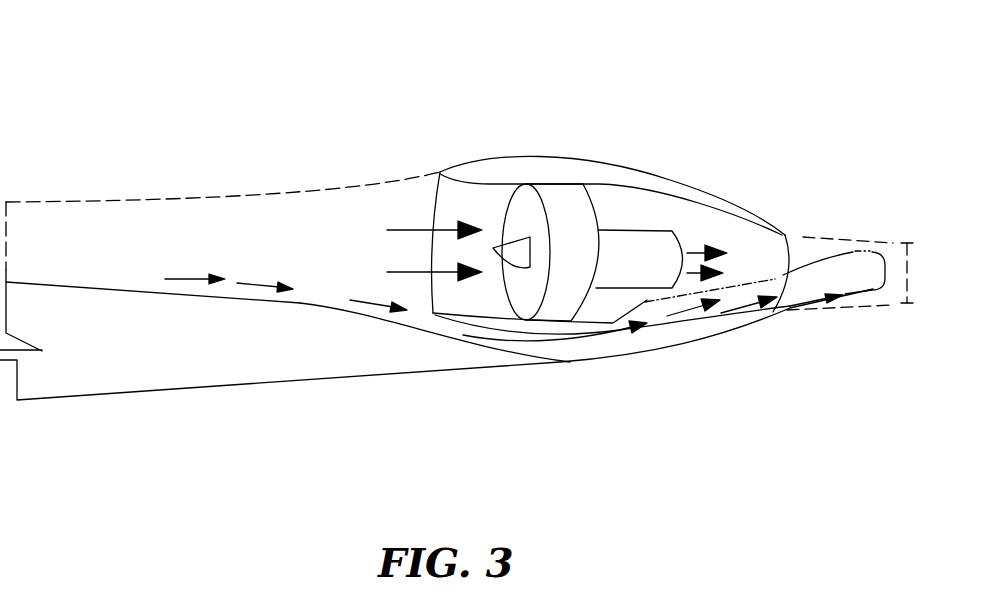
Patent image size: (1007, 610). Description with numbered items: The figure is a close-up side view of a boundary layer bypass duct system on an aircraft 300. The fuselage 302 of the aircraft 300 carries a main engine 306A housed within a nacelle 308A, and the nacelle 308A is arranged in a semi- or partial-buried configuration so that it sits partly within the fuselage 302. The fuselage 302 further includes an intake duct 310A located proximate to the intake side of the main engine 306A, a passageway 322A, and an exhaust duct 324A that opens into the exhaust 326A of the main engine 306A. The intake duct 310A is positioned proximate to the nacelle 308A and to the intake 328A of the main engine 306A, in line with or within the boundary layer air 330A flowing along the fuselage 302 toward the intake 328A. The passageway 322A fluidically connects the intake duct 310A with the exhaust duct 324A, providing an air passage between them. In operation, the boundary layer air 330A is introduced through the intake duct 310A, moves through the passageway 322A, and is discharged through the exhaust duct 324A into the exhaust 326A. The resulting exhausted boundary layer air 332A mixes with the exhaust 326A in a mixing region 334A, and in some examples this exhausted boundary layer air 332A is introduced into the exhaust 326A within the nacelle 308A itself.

The aircraft 300 is at (175, 60).
The fuselage 302 is at (224, 345).
The main engine 306A is at (562, 202).
The nacelle 308A is at (607, 176).
The intake duct 310A is at (442, 343).
The passageway 322A is at (548, 348).
The exhaust duct 324A is at (643, 335).
The exhaust 326A is at (698, 232).
The intake 328A is at (415, 252).
The boundary layer air 330A is at (338, 300).
The exhausted boundary layer air 332A is at (726, 292).
The mixing region 334A is at (843, 275).